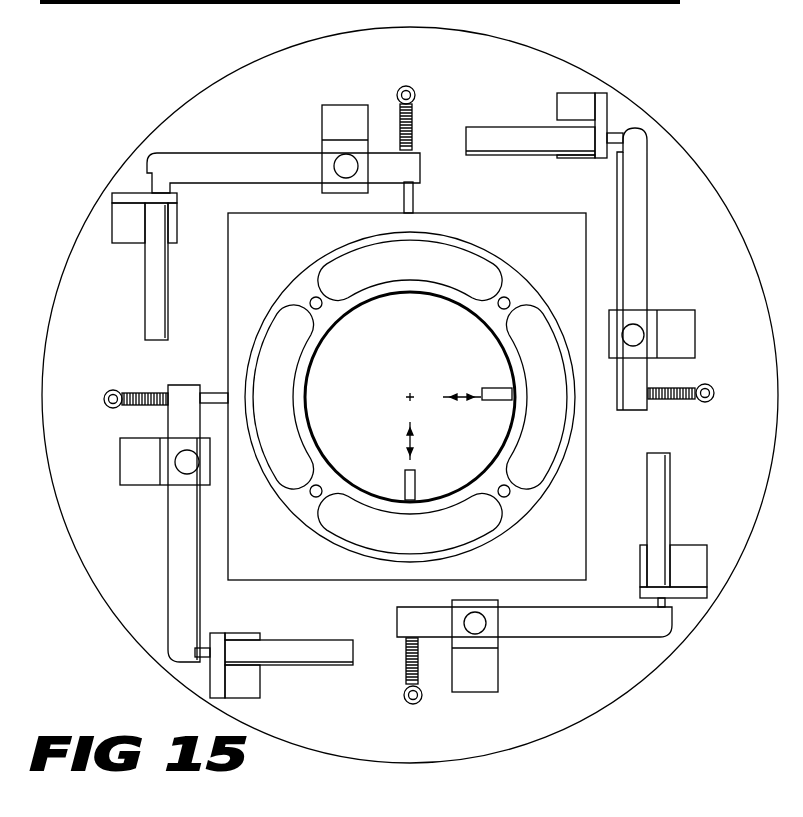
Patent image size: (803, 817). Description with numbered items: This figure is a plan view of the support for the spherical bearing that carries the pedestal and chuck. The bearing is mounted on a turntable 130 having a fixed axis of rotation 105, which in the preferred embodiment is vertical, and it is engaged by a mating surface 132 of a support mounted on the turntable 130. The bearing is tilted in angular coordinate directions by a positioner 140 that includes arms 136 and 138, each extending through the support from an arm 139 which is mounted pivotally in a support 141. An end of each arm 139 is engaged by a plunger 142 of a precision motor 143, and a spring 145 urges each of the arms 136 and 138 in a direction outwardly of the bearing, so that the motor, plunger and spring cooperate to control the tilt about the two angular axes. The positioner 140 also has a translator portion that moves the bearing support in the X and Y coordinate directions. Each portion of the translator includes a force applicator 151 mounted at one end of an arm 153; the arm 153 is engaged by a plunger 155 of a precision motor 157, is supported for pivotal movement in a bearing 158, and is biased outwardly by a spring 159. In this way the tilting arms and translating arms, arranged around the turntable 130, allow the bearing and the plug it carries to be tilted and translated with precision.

The axis of rotation 105 is at (408, 394).
The turntable 130 is at (708, 200).
The mating surface 132 is at (511, 278).
The arm 136 is at (405, 485).
The arm 138 is at (497, 388).
The arm 139 is at (641, 282).
The positioner 140 is at (687, 154).
The support 141 is at (694, 344).
The plunger 142 is at (618, 132).
The precision motor 143 is at (500, 132).
The spring 145 is at (680, 400).
The force applicator 151 is at (413, 205).
The arm 153 is at (220, 157).
The plunger 155 is at (204, 644).
The precision motor 157 is at (163, 308).
The bearing 158 is at (155, 485).
The spring 159 is at (152, 392).